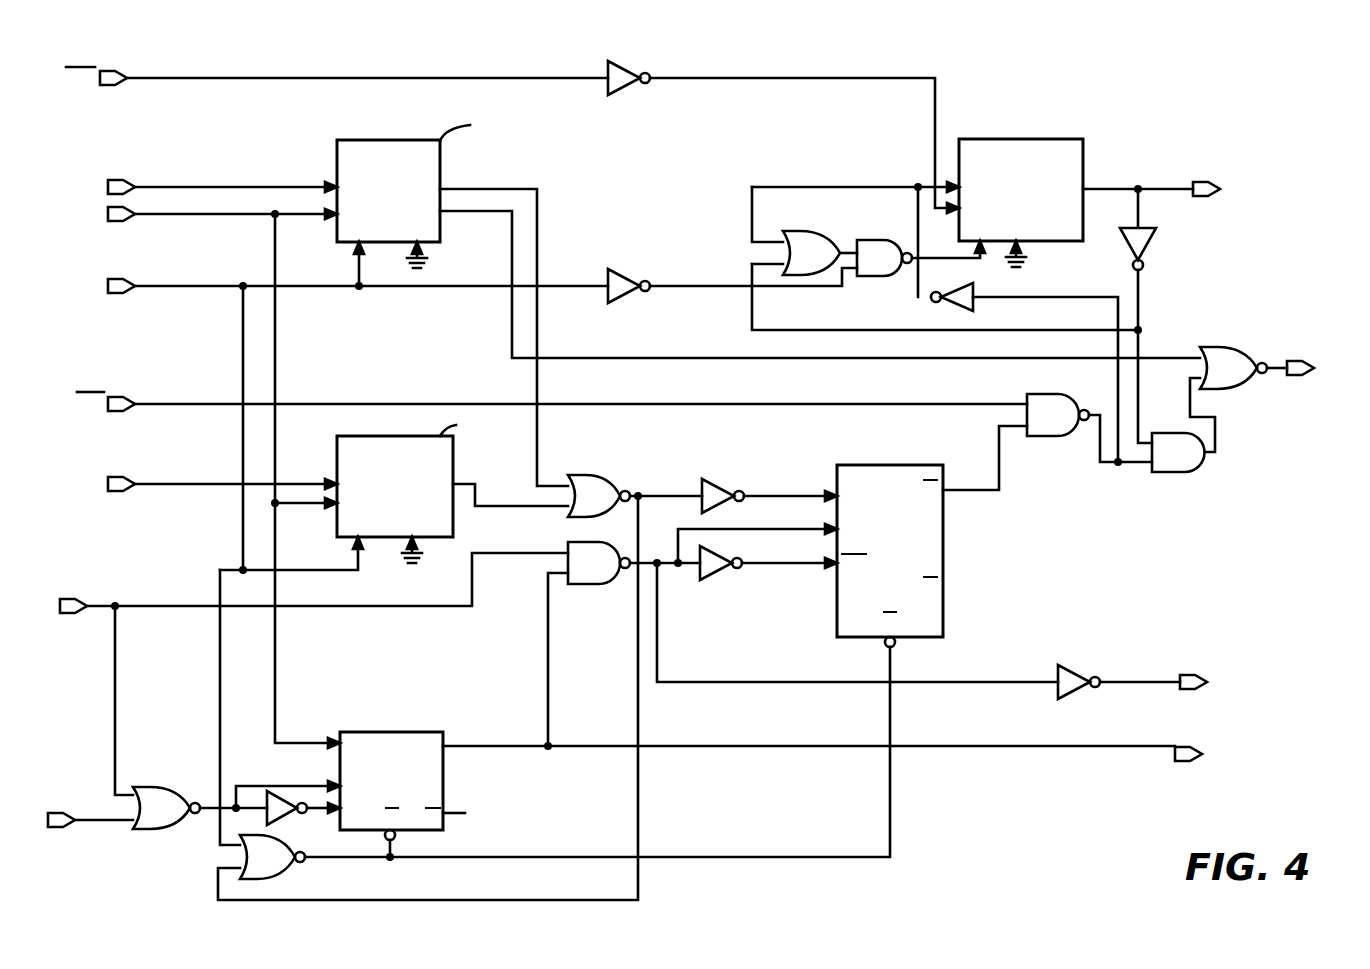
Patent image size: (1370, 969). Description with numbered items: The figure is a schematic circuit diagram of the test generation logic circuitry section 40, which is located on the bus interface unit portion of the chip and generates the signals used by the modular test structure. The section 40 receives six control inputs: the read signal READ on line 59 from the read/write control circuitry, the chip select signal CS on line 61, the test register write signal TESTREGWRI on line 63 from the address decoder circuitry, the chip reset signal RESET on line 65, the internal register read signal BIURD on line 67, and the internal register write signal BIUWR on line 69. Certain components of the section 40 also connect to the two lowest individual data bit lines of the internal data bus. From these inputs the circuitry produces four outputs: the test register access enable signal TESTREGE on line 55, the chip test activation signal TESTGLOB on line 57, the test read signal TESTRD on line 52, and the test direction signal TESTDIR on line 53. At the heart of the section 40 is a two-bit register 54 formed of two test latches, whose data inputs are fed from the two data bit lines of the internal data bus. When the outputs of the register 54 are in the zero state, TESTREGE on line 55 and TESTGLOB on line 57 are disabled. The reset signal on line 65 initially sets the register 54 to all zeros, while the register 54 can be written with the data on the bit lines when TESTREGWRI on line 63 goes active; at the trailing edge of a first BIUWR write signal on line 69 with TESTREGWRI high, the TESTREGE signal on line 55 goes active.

The test generation logic circuitry section 40 is at (696, 466).
The line 52 is at (1140, 682).
The line 53 is at (1274, 367).
The two-bit register 54 is at (400, 351).
The line 55 is at (1145, 754).
The line 57 is at (1174, 189).
The line 59 is at (212, 57).
The line 61 is at (195, 385).
The line 63 is at (214, 215).
The line 65 is at (205, 288).
The line 67 is at (177, 586).
The line 69 is at (108, 822).